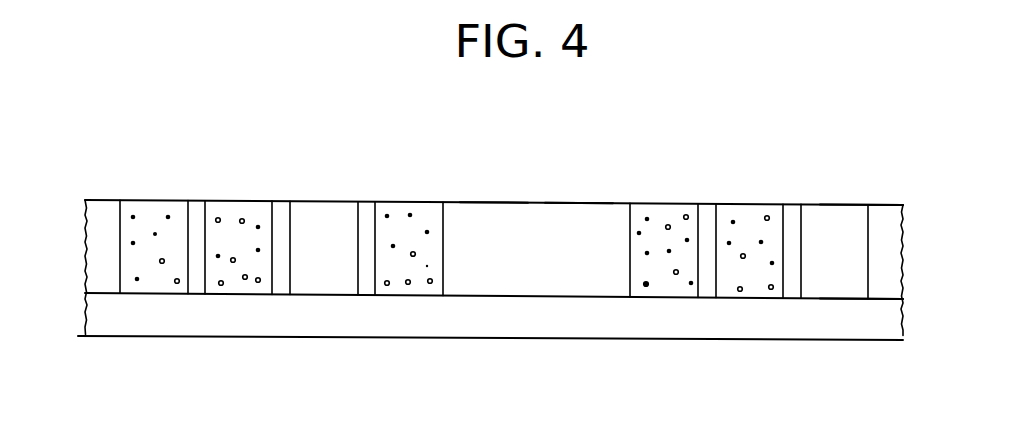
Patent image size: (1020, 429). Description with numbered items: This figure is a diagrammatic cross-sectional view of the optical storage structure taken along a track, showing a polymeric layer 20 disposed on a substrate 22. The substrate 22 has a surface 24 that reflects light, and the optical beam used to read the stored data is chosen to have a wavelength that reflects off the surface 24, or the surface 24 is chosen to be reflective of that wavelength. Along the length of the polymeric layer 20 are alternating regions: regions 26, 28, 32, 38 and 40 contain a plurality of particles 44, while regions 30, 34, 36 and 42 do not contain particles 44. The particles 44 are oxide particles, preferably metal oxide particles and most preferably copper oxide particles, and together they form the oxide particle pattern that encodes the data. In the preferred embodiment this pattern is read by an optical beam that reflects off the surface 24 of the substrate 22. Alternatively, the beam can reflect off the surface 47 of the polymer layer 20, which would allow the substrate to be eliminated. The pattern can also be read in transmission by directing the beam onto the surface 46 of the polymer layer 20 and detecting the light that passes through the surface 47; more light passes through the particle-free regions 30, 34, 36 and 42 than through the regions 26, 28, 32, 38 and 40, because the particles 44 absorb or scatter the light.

The polymeric layer 20 is at (93, 223).
The substrate 22 is at (161, 323).
The surface 24 is at (101, 293).
The region 26 is at (120, 190).
The region 28 is at (205, 191).
The region 30 is at (290, 192).
The region 32 is at (375, 192).
The region 34 is at (460, 192).
The region 36 is at (545, 193).
The region 38 is at (630, 194).
The region 40 is at (716, 194).
The region 42 is at (801, 195).
The particles 44 is at (245, 279).
The surface 46 is at (864, 204).
The surface 47 is at (853, 300).